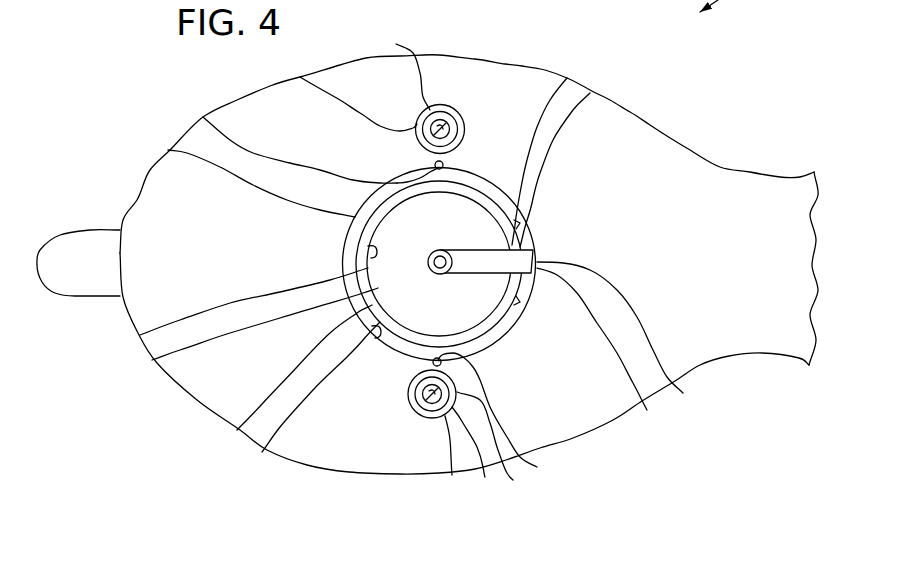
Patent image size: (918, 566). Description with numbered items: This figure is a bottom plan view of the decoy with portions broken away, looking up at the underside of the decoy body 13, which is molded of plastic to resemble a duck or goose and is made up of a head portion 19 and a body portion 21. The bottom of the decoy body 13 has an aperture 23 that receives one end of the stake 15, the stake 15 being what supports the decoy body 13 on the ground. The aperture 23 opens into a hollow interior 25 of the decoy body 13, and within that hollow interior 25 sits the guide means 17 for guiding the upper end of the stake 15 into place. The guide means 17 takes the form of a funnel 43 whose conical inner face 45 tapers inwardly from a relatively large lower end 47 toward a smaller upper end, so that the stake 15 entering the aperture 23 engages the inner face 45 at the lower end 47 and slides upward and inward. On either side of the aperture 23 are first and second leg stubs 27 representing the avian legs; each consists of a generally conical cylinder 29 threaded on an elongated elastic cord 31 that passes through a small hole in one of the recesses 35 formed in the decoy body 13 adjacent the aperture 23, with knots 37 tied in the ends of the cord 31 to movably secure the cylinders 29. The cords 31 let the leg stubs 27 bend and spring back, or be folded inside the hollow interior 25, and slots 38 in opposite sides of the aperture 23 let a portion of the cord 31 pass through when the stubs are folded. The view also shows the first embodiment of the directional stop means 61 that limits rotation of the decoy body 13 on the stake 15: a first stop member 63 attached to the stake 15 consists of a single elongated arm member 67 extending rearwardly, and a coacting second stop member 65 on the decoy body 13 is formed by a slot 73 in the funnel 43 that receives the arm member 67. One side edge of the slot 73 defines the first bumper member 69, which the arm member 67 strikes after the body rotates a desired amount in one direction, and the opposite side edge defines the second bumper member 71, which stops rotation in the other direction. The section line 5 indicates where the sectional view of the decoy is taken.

The section line 5- 5 is at (441, 13).
The decoy body 13 is at (694, 139).
The stake 15 is at (549, 150).
The guide means 17 is at (503, 328).
The head portion 19 is at (97, 257).
The body portion 21 is at (207, 386).
The aperture 23 is at (262, 450).
The hollow interior 25 is at (236, 431).
The leg stubs 27 is at (463, 98).
The conical cylinder 29 is at (439, 265).
The elastic cord 31 is at (447, 243).
The recesses 35 is at (301, 77).
The knots 37 is at (441, 126).
The slots 38 is at (203, 118).
The funnel 43 is at (153, 361).
The inner face 45 is at (140, 334).
The lower end 47 is at (167, 150).
The directional stop means 61 is at (530, 243).
The first stop member 63 is at (659, 424).
The second stop member 65 is at (589, 87).
The arm member 67 is at (623, 332).
The first bumper member 69 is at (513, 292).
The second bumper member 71 is at (543, 220).
The slot 73 is at (535, 245).